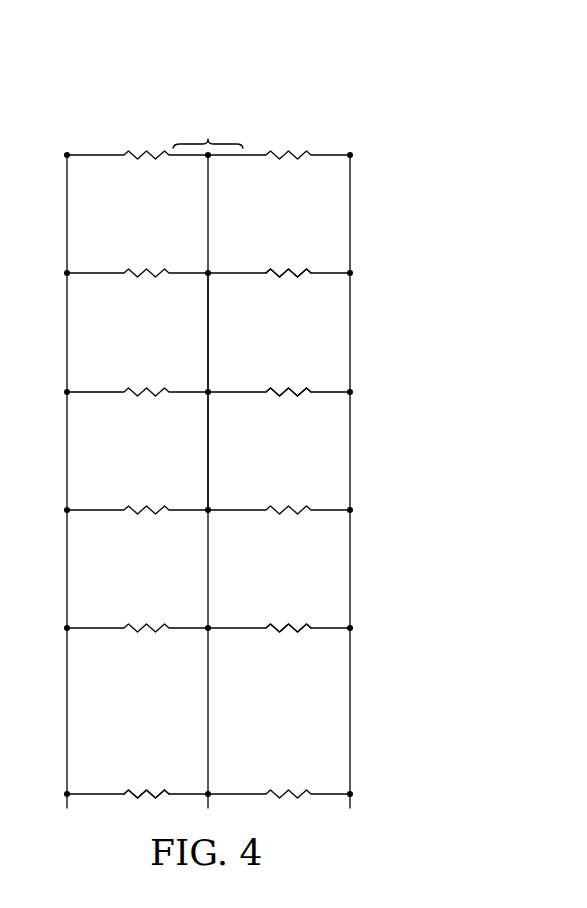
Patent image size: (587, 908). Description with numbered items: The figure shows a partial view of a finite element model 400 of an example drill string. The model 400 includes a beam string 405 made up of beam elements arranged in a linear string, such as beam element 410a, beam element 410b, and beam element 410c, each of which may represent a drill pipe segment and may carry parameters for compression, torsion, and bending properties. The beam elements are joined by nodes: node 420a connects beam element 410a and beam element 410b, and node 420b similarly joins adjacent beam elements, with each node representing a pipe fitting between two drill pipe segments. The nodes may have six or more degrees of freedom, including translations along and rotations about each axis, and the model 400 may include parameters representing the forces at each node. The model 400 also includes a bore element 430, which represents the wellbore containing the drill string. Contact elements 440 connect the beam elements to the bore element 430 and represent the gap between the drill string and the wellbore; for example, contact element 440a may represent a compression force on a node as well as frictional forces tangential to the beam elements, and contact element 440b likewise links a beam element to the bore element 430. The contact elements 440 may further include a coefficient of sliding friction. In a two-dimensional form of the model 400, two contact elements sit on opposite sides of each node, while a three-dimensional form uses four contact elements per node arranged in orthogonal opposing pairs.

The finite element model 400 is at (113, 107).
The beam string 405 is at (208, 126).
The beam element 410a is at (208, 215).
The beam element 410b is at (208, 333).
The beam element 410c is at (208, 452).
The node 420a is at (213, 279).
The node 420b is at (213, 397).
The bore element 430 is at (356, 213).
The contact element 440 is at (278, 633).
The contact element 440a is at (281, 269).
The contact element 440b is at (281, 388).